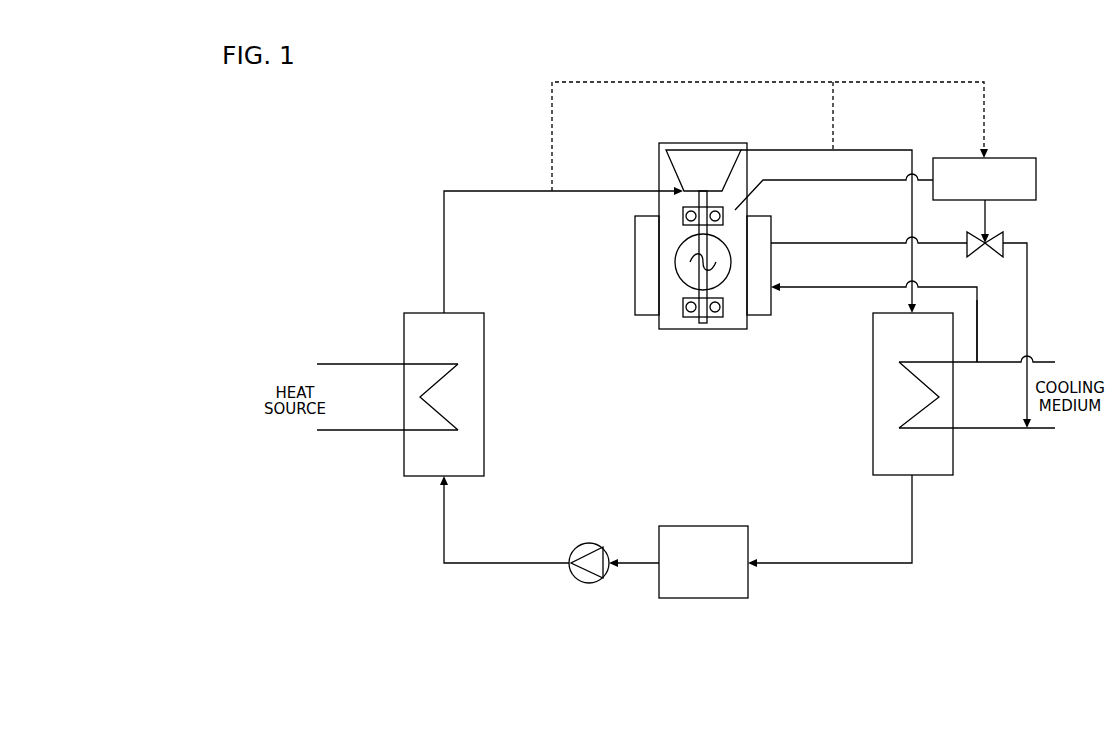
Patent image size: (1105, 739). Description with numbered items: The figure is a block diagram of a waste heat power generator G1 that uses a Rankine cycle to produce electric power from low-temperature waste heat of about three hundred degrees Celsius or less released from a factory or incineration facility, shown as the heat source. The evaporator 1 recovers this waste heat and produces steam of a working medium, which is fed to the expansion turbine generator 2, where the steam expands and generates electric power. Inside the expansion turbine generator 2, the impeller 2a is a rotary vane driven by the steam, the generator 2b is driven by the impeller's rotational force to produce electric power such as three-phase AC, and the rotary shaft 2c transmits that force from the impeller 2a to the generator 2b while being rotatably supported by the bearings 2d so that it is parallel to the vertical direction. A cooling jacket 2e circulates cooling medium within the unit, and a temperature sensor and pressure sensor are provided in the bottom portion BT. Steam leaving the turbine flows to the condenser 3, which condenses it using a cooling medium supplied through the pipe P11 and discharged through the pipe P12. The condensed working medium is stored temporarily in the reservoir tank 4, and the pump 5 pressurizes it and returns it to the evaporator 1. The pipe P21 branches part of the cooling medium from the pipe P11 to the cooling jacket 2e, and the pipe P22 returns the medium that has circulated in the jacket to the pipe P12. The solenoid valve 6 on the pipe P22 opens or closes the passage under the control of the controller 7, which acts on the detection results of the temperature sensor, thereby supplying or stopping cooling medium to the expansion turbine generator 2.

The evaporator 1 is at (404, 323).
The expansion turbine generator 2 is at (669, 143).
The impeller 2a is at (732, 168).
The generator 2b is at (727, 248).
The rotary shaft 2c is at (702, 230).
The bearings 2d is at (683, 215).
The cooling jacket 2e is at (636, 293).
The condenser 3 is at (931, 478).
The reservoir tank 4 is at (748, 580).
The pump 5 is at (586, 543).
The solenoid valve 6 is at (1003, 237).
The controller 7 is at (1036, 178).
The bottom portion BT is at (715, 340).
The waste heat power generator G1 is at (1047, 128).
The pipe P11 is at (1040, 362).
The pipe P12 is at (1037, 430).
The pipe P21 is at (978, 328).
The pipe P22 is at (1027, 298).